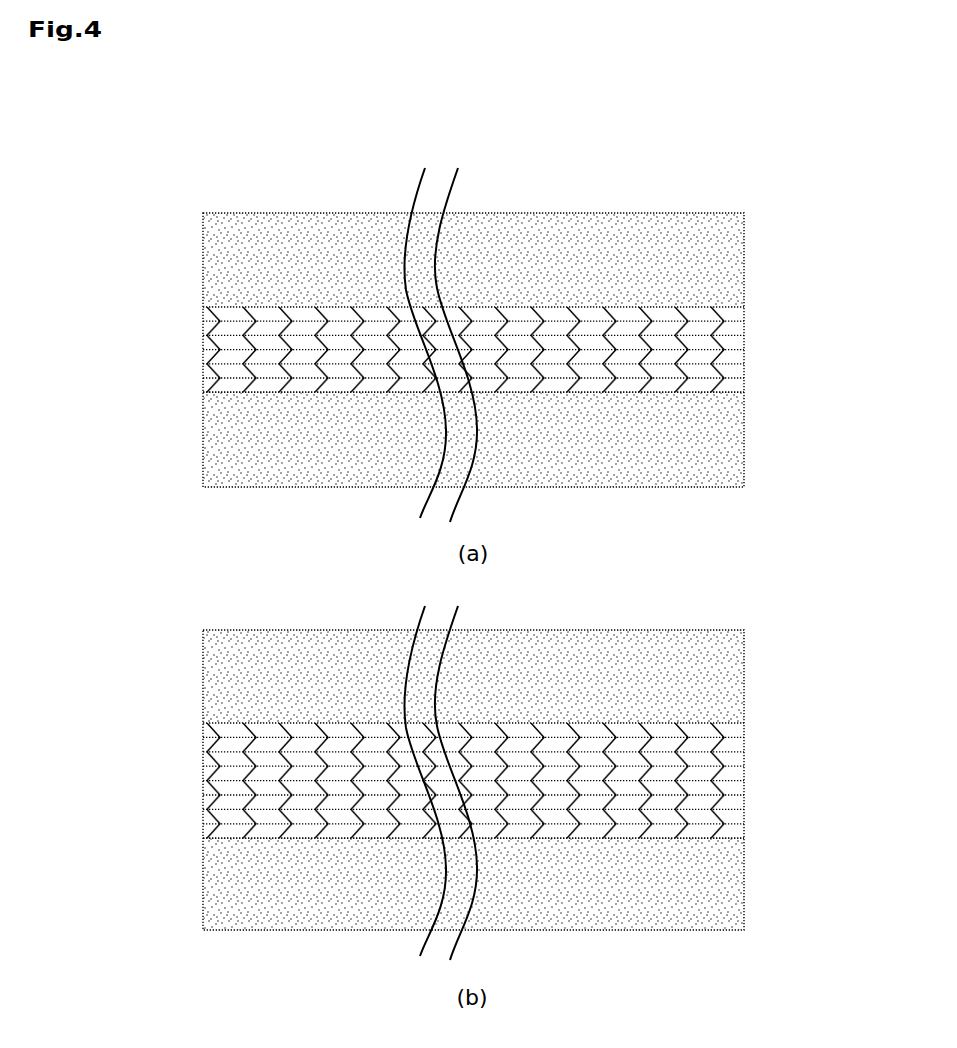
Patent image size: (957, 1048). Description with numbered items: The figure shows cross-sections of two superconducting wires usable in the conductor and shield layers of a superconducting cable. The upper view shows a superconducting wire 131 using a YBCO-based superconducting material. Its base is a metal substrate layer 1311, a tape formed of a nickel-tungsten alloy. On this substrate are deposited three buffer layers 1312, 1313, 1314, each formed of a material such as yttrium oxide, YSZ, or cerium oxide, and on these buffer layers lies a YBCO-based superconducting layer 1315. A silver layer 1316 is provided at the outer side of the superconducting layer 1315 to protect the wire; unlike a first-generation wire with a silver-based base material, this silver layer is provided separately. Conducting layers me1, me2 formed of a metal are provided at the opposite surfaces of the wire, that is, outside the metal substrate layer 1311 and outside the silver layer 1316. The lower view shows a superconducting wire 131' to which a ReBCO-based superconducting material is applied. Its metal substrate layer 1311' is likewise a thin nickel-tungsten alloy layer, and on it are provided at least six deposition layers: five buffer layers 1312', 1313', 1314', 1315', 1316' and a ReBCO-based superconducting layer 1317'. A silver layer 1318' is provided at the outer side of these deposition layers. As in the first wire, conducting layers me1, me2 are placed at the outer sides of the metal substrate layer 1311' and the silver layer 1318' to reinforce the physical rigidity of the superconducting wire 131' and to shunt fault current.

The superconducting wire 131 is at (499, 526).
The superconducting wire 131' is at (546, 572).
The conducting layer me1 is at (723, 255).
The conducting layer me2 is at (725, 435).
The metal substrate layer 1311 is at (518, 382).
The buffer layer 1312 is at (518, 368).
The buffer layer 1313 is at (518, 354).
The buffer layer 1314 is at (518, 340).
The YBCO-based superconducting layer 1315 is at (518, 326).
The silver layer 1316 is at (518, 313).
The metal substrate layer 1311' is at (520, 829).
The buffer layer 1312' is at (520, 814).
The buffer layer 1313' is at (520, 800).
The buffer layer 1314' is at (520, 786).
The buffer layer 1315' is at (520, 772).
The buffer layer 1316' is at (520, 758).
The ReBCO-based superconducting layer 1317' is at (520, 743).
The silver layer 1318' is at (520, 729).